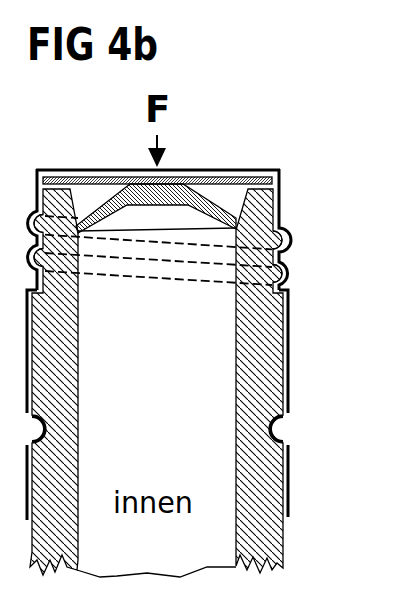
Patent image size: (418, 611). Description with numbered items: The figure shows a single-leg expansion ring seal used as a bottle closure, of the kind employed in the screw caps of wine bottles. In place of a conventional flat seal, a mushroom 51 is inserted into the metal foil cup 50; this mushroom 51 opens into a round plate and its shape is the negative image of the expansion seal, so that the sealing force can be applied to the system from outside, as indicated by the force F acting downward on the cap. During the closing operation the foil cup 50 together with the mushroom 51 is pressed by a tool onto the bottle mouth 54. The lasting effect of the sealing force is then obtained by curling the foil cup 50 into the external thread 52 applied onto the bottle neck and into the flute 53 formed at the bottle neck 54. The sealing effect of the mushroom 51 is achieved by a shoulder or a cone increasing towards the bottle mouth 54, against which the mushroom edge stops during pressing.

The metal foil cup 50 is at (281, 187).
The mushroom 51 is at (284, 254).
The external thread 52 is at (288, 312).
The flute 53 is at (282, 431).
The bottle mouth 54 is at (260, 532).